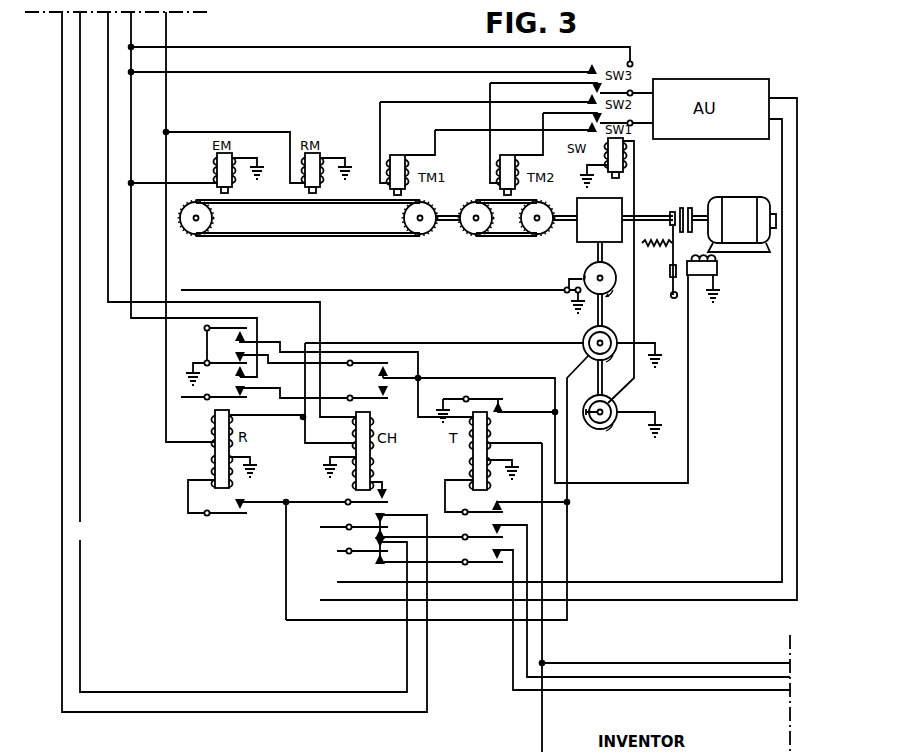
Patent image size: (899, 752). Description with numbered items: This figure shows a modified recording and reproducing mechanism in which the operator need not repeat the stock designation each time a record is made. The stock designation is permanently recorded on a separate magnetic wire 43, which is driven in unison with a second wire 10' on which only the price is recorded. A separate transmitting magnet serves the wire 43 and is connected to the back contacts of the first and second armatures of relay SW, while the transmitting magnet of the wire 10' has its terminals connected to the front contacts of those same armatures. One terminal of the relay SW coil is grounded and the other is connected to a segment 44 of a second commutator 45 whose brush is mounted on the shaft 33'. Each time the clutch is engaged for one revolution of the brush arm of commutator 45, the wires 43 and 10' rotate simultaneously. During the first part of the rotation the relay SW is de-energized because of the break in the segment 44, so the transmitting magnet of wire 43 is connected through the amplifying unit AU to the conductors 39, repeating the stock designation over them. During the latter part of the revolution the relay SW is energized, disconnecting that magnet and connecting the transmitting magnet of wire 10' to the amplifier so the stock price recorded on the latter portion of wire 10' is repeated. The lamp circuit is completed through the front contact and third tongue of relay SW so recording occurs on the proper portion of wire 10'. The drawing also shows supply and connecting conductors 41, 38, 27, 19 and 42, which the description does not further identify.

The supply conductors 41 is at (62, 46).
The conductor 38 is at (108, 52).
The conductor 27 is at (133, 36).
The conductor 19 is at (167, 36).
The second wire 10' is at (308, 234).
The separate magnetic wire 43 is at (509, 238).
The shaft 33' is at (398, 284).
The segment 44 is at (598, 430).
The second commutator 45 is at (607, 404).
The conductors 39 is at (630, 580).
The conductor 42 is at (544, 740).